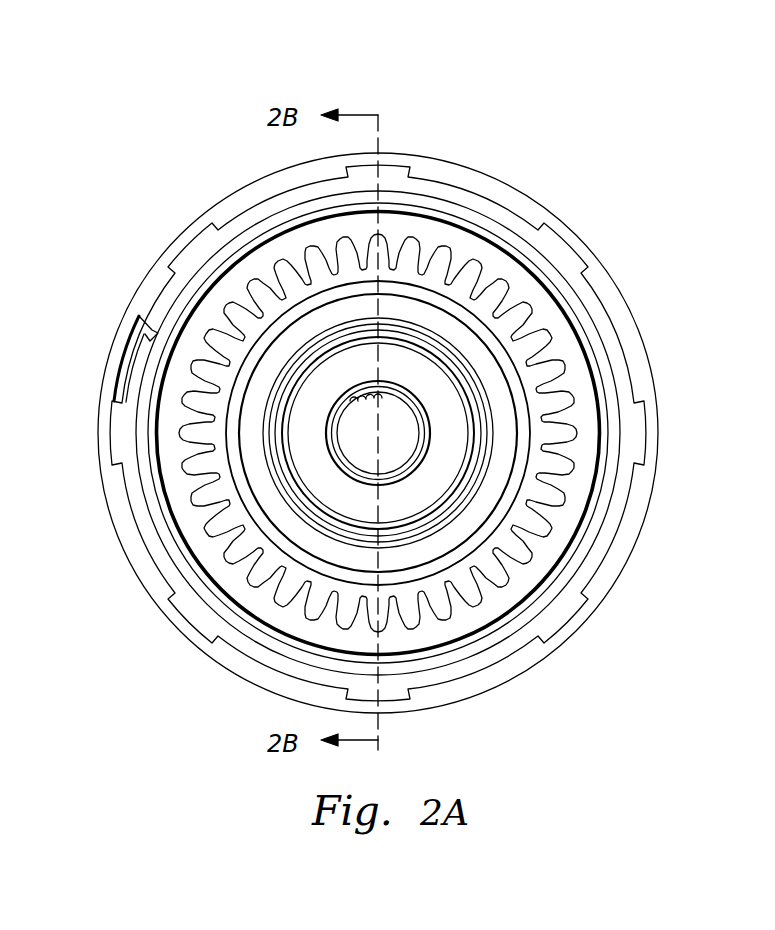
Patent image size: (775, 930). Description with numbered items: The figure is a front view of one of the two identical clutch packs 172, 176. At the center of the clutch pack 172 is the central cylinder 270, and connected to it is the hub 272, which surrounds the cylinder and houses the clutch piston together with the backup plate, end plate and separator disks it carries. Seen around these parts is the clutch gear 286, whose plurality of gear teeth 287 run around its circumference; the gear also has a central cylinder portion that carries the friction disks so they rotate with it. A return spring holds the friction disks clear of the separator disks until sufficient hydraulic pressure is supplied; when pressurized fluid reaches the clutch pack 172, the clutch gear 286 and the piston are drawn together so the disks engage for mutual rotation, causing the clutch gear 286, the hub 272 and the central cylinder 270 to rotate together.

The clutch pack 172 is at (587, 227).
The clutch pack 176 is at (378, 433).
The hub 272 is at (476, 171).
The clutch gear 286 is at (530, 347).
The gear teeth 287 is at (570, 402).
The central cylinder 270 is at (430, 488).